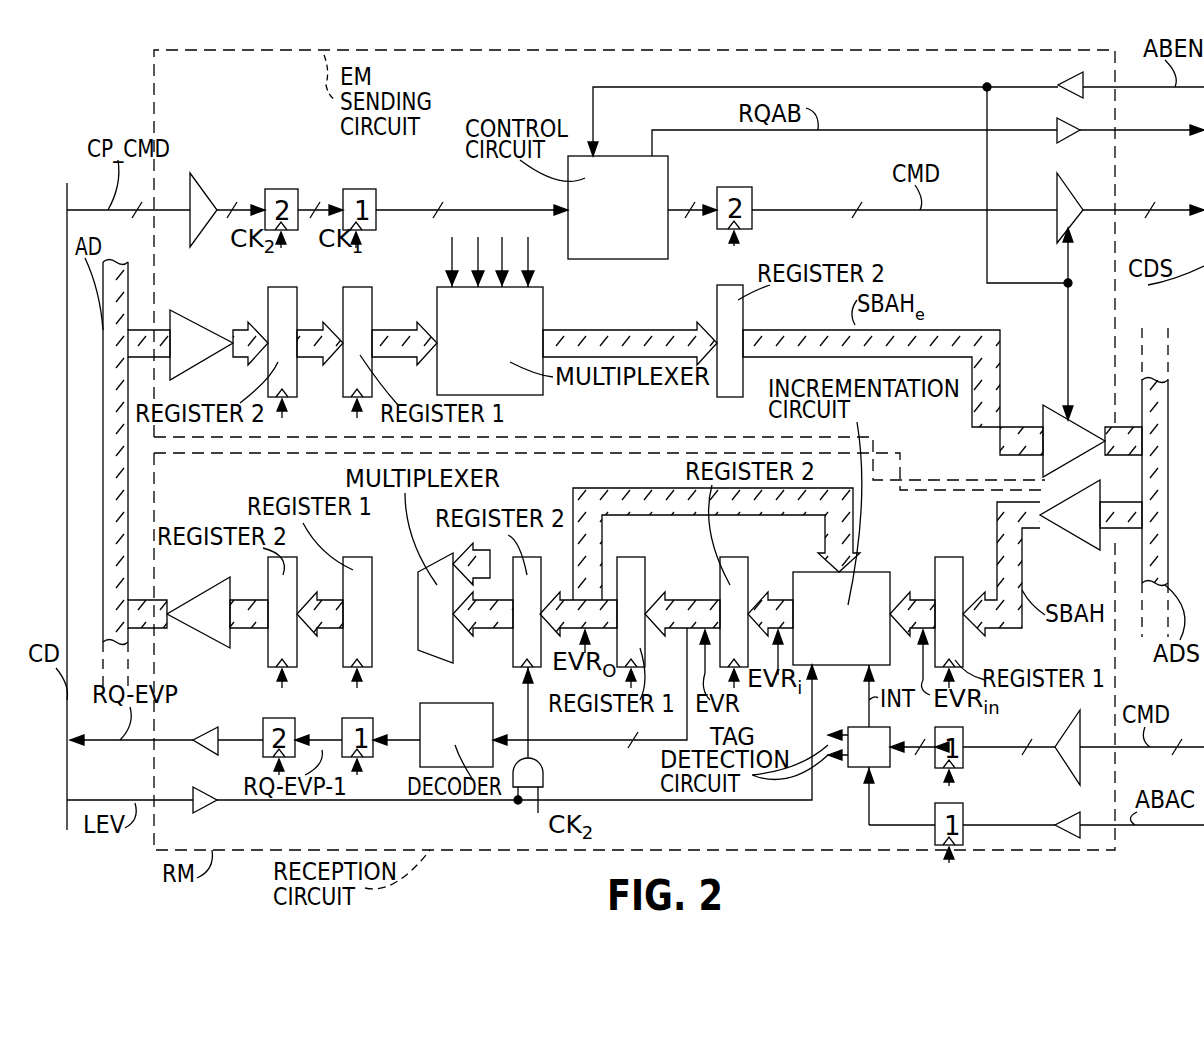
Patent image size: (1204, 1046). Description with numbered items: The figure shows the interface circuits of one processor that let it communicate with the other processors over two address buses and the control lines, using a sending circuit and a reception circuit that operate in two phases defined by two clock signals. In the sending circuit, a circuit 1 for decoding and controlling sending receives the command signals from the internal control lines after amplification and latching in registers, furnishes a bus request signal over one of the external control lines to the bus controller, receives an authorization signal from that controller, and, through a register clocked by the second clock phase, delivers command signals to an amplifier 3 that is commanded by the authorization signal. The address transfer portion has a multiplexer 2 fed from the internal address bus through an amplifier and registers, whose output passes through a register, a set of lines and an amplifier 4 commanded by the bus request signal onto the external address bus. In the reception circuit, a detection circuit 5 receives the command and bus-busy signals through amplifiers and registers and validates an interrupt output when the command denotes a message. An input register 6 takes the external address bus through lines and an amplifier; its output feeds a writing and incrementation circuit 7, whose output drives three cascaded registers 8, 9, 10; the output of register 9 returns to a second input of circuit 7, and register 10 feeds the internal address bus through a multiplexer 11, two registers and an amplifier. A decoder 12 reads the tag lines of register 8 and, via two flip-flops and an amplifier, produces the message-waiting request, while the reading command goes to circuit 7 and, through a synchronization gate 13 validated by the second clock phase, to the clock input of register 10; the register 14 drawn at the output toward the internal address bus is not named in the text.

The circuit for decoding and controlling sending 1 is at (655, 165).
The multiplexer 2 is at (515, 306).
The amplifier 3 is at (1057, 188).
The amplifier 4 is at (1043, 418).
The detection circuit 5 is at (850, 768).
The input register 6 is at (948, 560).
The writing and incrementation circuit 7 is at (886, 575).
The register 8 is at (735, 560).
The register 9 is at (631, 560).
The register 10 is at (527, 568).
The multiplexer 11 is at (418, 590).
The decoder 12 is at (435, 705).
The synchronization gate 13 is at (543, 775).
The register 2 14 is at (268, 580).